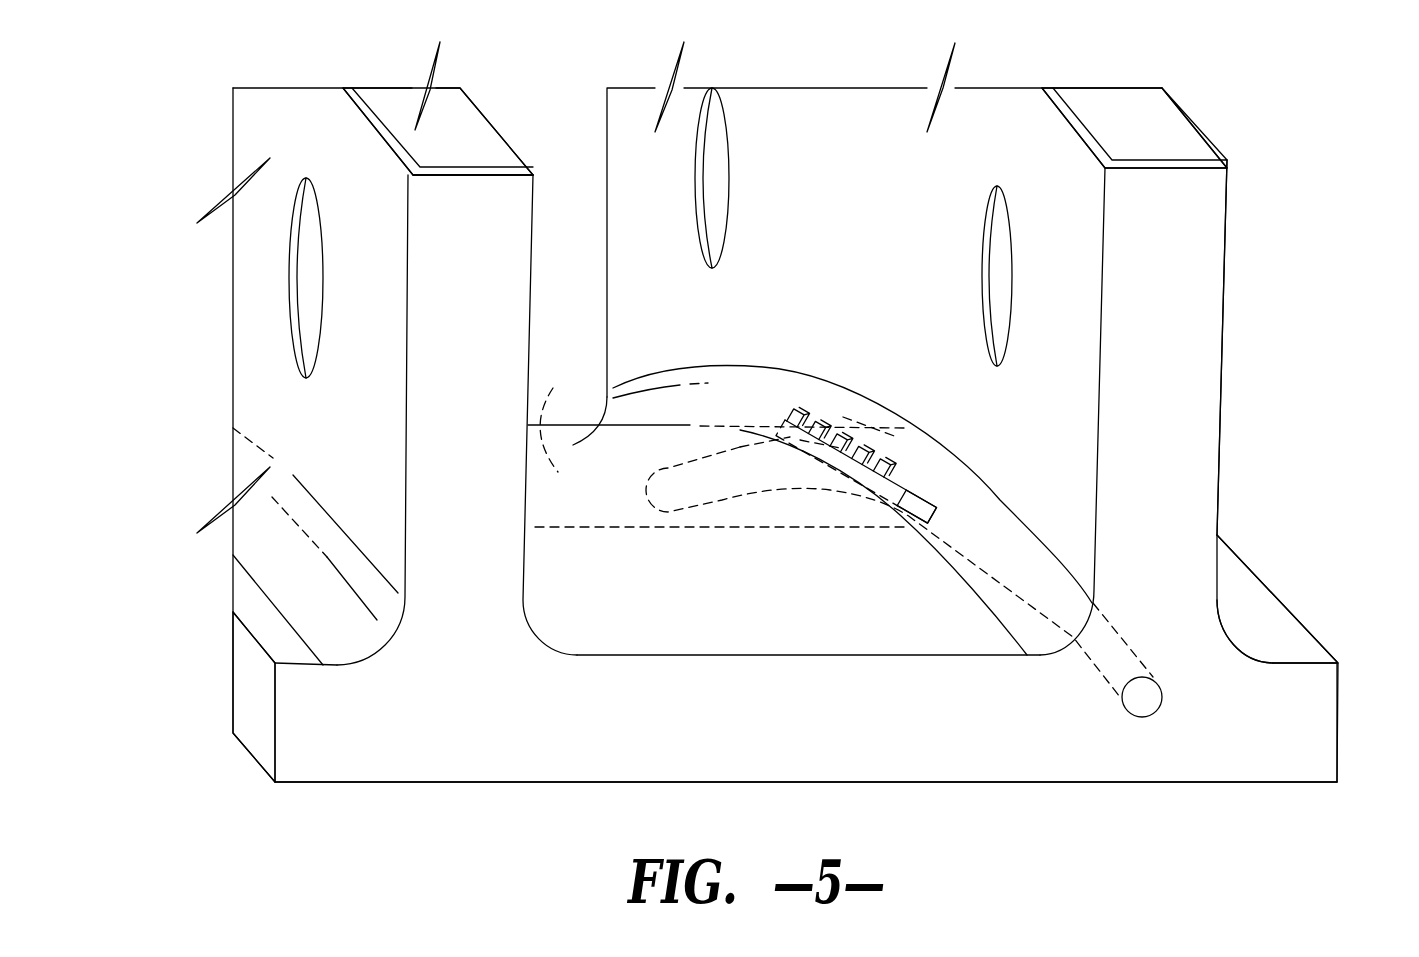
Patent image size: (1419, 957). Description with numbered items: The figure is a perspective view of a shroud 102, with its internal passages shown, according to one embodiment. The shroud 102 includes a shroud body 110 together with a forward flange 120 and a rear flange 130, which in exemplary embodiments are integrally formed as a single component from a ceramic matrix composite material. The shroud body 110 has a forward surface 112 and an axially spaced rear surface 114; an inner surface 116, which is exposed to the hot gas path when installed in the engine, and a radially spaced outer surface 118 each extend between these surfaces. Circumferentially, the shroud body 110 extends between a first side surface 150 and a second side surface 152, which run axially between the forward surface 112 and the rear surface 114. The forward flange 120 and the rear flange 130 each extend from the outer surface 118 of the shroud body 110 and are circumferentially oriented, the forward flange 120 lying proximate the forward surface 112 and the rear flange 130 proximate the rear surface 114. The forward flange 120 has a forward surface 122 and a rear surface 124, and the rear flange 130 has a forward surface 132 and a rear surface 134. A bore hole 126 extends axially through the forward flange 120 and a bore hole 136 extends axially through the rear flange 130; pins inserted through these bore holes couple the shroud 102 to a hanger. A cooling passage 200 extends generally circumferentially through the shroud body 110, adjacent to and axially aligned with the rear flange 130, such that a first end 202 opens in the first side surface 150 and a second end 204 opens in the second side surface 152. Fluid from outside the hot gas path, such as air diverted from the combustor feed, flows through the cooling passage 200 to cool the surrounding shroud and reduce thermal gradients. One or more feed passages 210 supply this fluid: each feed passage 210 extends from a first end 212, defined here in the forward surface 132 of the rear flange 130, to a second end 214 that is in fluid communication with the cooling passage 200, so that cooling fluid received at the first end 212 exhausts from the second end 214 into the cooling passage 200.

The shroud 102 is at (157, 153).
The shroud body 110 is at (417, 800).
The forward surface 112 is at (255, 688).
The rear surface 114 is at (1340, 717).
The inner surface 116 is at (957, 790).
The outer surface 118 is at (798, 640).
The forward flange 120 is at (338, 390).
The forward surface 122 is at (343, 133).
The rear surface 124 is at (538, 208).
The bore hole 126 is at (307, 287).
The rear flange 130 is at (1250, 265).
The forward surface 132 is at (1037, 140).
The rear surface 134 is at (1222, 412).
The bore hole 136 is at (997, 265).
The first side surface 150 is at (1250, 757).
The second side surface 152 is at (411, 506).
The cooling passage 200 is at (740, 470).
The first end 202 is at (1120, 715).
The second end 204 is at (645, 463).
The feed passage 210 is at (843, 410).
The first end 212 is at (875, 473).
The second end 214 is at (953, 508).